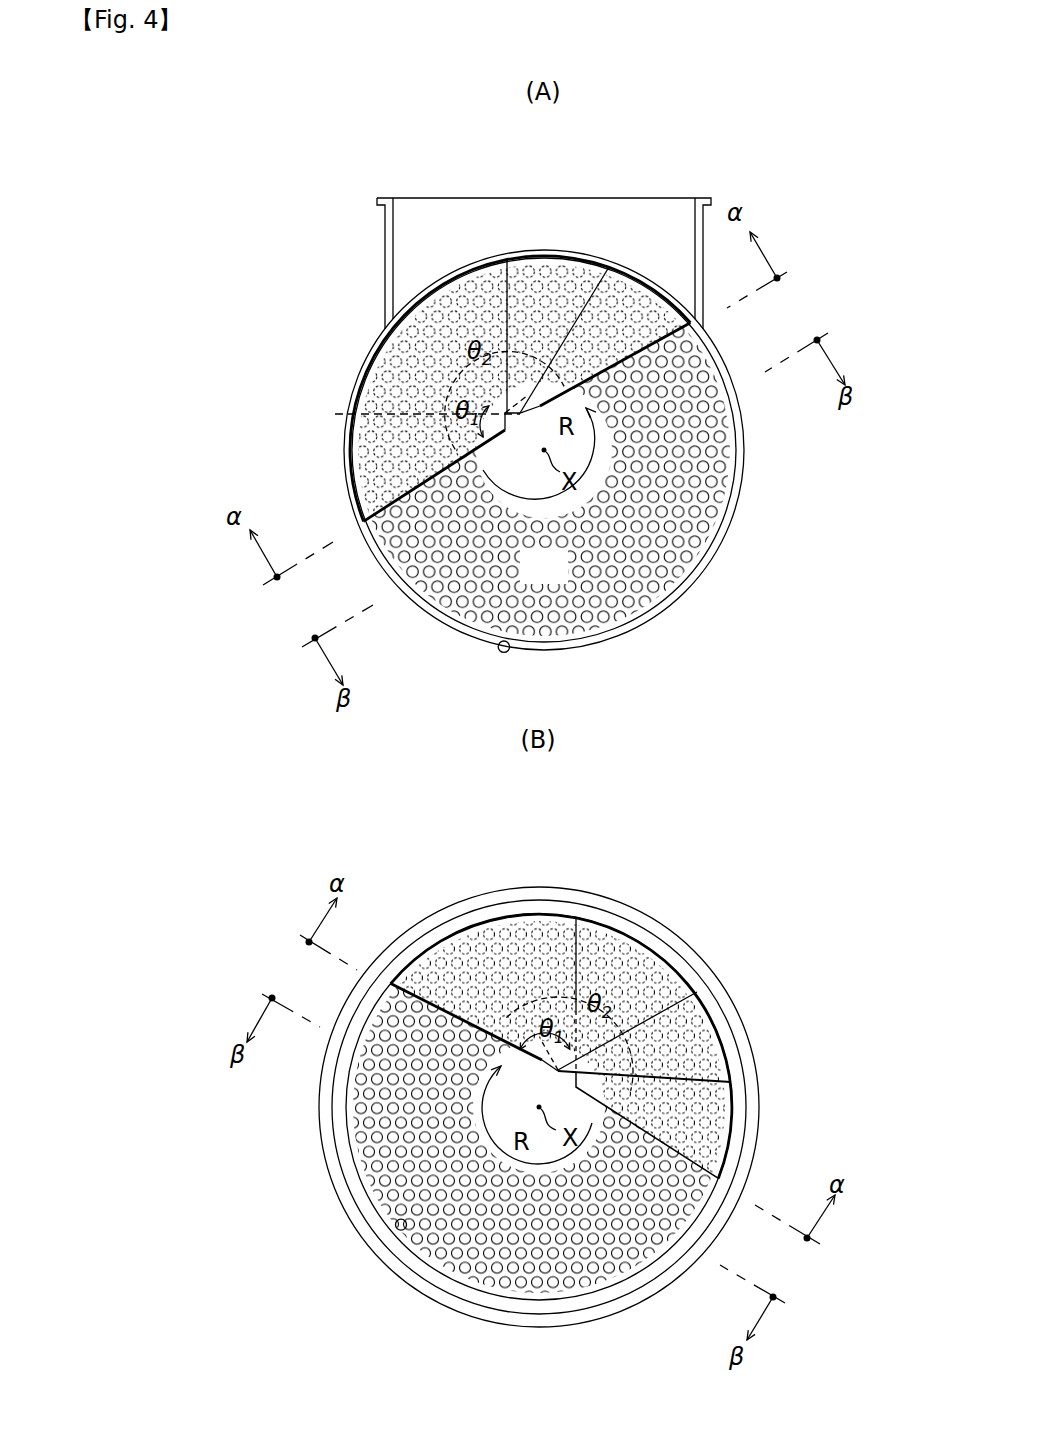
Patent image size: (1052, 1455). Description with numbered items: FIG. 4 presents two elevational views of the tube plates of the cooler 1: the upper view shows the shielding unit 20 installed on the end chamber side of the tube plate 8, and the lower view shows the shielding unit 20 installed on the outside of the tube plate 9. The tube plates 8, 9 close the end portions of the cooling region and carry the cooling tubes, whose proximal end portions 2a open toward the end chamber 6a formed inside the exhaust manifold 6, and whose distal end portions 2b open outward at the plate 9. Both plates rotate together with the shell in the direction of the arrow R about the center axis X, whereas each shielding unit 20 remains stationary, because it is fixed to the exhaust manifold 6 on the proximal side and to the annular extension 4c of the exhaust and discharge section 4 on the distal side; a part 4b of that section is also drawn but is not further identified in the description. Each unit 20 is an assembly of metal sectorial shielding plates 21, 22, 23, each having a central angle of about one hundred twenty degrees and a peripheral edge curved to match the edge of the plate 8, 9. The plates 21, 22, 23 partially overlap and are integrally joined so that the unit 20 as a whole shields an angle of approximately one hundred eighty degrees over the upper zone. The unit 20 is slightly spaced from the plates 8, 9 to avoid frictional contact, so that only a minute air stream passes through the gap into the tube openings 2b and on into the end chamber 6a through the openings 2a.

The cooler 1 is at (329, 270).
The proximal end portion 2a is at (504, 645).
The distal end portion 2b is at (400, 1229).
The exhaust and discharge section 4 is at (422, 917).
The inner wall of outer cylinder 4b is at (632, 922).
The annular extension 4c is at (338, 1090).
The exhaust manifold 6 is at (346, 413).
The end chamber 6a is at (544, 450).
The tube plate 8 is at (712, 503).
The tube plate 9 is at (365, 1152).
The shielding unit 20 is at (345, 455).
The sectorial shielding plate 21 is at (418, 313).
The sectorial shielding plate 22 is at (578, 268).
The sectorial shielding plate 23 is at (658, 315).